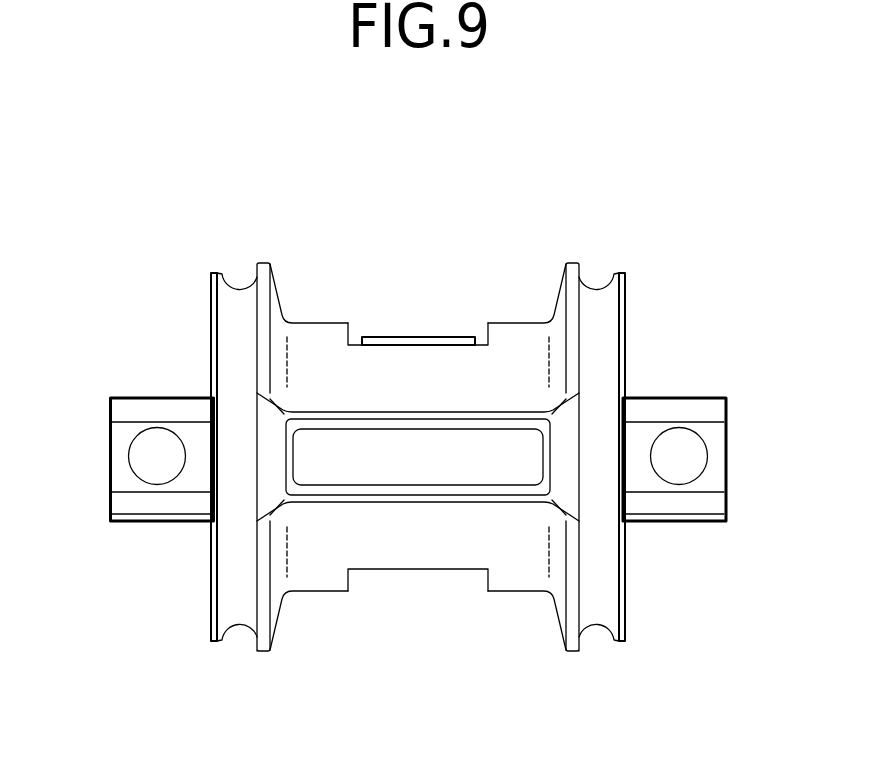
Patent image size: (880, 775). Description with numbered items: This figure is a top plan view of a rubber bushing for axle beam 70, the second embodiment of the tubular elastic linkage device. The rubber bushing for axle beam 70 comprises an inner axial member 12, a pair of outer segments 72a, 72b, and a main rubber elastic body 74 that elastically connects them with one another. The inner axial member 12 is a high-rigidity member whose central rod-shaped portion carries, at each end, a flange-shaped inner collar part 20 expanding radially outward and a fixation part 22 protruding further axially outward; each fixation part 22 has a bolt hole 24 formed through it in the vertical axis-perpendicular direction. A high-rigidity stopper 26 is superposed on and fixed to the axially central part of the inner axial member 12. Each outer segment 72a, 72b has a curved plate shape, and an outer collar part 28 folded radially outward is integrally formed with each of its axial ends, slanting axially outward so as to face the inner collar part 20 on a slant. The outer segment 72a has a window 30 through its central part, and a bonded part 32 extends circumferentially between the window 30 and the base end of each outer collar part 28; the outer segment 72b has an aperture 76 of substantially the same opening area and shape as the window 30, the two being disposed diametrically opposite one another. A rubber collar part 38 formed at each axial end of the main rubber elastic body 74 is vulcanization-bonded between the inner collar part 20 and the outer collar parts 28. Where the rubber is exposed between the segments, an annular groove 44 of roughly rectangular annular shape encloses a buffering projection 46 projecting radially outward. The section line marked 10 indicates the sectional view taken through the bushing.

The section line of FIG. 10 is at (393, 243).
The inner axial member 12 is at (653, 379).
The inner collar part 20 is at (215, 603).
The fixation part 22 is at (153, 507).
The bolt hole 24 is at (132, 470).
The stopper 26 is at (458, 338).
The outer collar part 28 is at (263, 278).
The window 30 is at (350, 337).
The bonded part 32 is at (325, 335).
The rubber collar part 38 is at (233, 342).
The annular groove 44 is at (467, 427).
The buffering projection 46 is at (386, 462).
The rubber bushing for axle beam 70 is at (711, 302).
The outer segment 72a is at (325, 314).
The outer segment 72b is at (334, 603).
The main rubber elastic body 74 is at (596, 281).
The aperture 76 is at (478, 593).